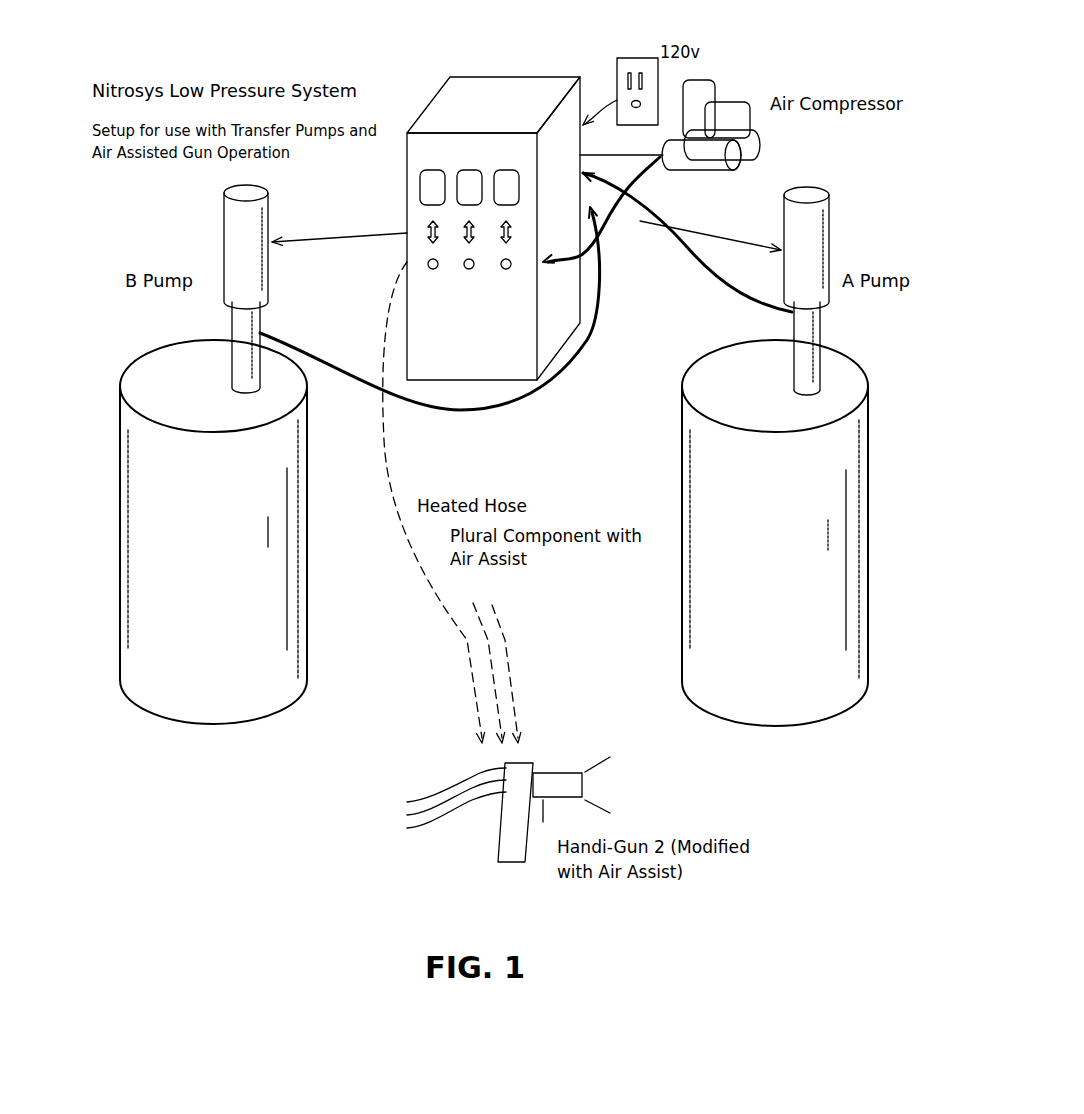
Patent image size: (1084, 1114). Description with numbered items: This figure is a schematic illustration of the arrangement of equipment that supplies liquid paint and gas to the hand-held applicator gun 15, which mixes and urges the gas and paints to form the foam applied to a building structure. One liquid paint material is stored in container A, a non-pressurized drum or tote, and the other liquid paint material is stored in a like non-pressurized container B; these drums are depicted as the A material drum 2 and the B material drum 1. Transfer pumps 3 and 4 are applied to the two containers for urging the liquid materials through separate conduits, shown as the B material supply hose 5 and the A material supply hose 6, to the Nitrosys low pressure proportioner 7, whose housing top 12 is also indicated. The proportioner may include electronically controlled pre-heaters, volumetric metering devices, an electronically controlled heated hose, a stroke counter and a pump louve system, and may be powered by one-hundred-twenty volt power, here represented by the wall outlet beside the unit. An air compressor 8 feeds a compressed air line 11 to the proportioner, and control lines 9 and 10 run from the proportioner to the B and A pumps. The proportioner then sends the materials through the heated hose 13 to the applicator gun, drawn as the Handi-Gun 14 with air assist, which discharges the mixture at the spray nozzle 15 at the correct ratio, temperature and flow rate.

The B material drum 1 is at (120, 522).
The A material drum 2 is at (681, 496).
The transfer pump 3 is at (223, 252).
The transfer pump 4 is at (829, 257).
The B material supply hose 5 is at (607, 293).
The A material supply hose 6 is at (703, 273).
The Nitrosys low pressure proportioner unit 7 is at (427, 108).
The air compressor 8 is at (727, 113).
The control line to B pump 9 is at (348, 235).
The control line to A pump 10 is at (700, 236).
The compressed air line 11 is at (617, 203).
The proportioner housing top 12 is at (523, 77).
The heated hose 13 is at (397, 490).
The Handi-Gun with air assist 14 is at (533, 757).
The hand-held applicator gun 15 is at (608, 785).